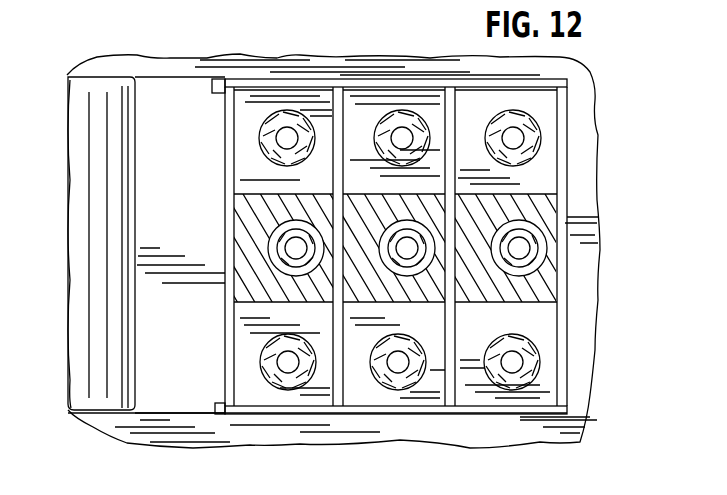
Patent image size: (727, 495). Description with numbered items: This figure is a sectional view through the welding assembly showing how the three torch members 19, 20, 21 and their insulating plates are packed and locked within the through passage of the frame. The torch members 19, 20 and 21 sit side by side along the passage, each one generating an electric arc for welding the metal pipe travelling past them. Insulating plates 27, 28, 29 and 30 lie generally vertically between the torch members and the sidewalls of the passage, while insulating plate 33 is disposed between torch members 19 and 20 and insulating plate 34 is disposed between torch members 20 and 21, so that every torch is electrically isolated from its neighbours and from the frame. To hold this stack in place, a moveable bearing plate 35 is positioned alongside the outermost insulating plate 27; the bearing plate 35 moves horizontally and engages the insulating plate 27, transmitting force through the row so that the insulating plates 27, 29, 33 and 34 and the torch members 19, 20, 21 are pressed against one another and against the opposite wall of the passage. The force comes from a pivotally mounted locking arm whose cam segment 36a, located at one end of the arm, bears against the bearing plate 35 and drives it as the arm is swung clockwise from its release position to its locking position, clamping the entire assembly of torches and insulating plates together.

The cam segment 36a is at (100, 88).
The bearing plate 35 is at (167, 88).
The insulating plate 28 is at (383, 84).
The insulating plate 29 is at (557, 210).
The insulating plate 33 is at (453, 330).
The insulating plate 27 is at (235, 350).
The torch member 21 is at (272, 393).
The insulating plate 34 is at (338, 373).
The torch member 20 is at (378, 397).
The insulating plate 30 is at (427, 412).
The torch member 19 is at (492, 400).